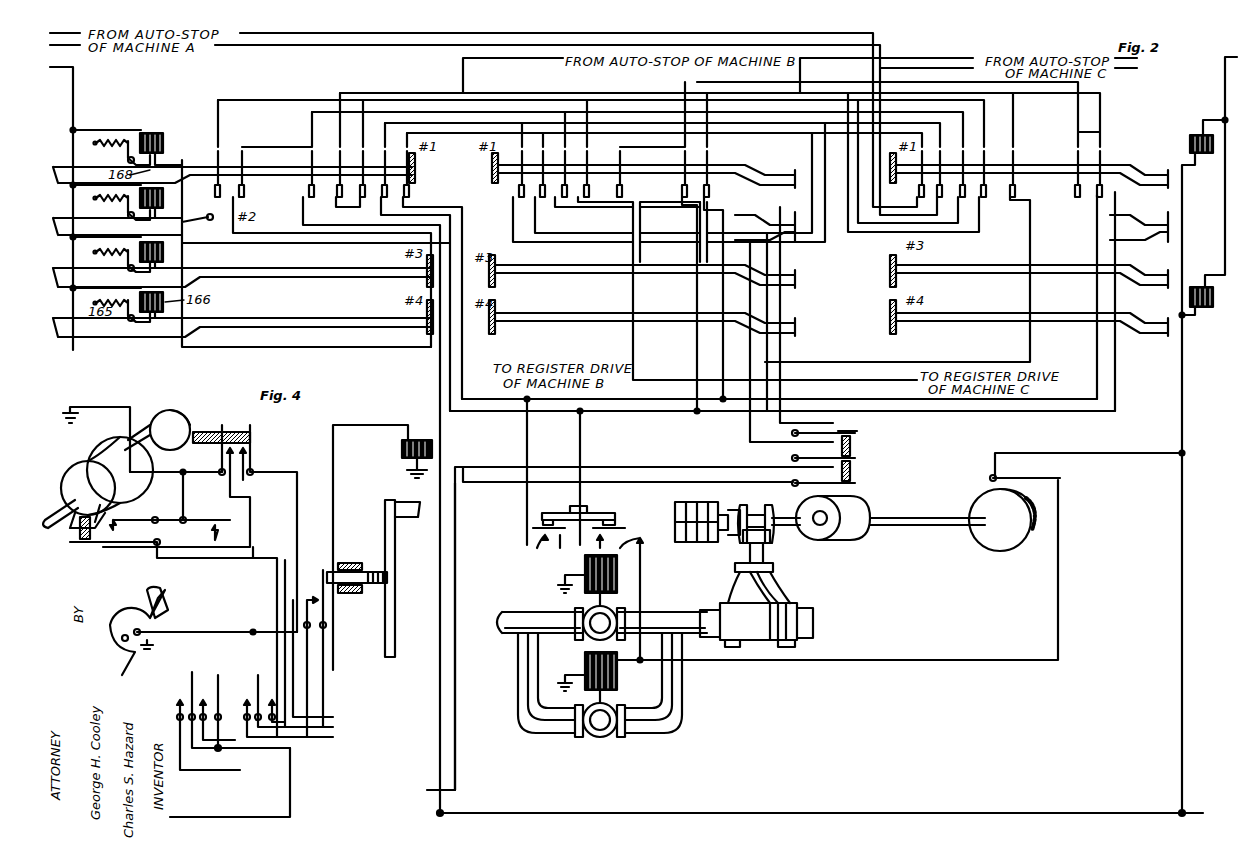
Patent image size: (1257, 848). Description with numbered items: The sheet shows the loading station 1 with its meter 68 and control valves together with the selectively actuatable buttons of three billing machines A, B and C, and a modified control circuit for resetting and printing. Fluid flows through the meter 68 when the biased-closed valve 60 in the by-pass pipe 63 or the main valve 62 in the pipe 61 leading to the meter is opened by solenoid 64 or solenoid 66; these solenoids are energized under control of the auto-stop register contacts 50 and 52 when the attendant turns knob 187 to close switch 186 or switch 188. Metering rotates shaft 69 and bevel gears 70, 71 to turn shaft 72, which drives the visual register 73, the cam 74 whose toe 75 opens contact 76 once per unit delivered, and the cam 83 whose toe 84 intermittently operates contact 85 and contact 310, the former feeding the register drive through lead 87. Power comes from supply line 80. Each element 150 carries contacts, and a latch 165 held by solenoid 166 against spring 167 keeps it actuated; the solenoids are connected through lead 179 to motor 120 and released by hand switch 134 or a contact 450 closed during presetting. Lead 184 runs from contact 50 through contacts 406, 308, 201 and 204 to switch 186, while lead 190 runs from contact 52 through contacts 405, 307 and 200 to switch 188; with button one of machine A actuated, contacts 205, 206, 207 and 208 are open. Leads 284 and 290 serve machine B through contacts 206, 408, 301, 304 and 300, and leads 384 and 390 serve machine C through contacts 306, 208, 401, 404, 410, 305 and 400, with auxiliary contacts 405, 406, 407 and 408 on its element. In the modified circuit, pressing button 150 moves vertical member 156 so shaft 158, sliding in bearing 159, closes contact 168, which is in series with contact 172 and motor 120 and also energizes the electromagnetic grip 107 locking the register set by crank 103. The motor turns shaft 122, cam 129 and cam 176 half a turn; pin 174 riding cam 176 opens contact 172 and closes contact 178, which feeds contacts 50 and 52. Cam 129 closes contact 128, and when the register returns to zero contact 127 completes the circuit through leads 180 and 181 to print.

In FIG. 2, the loading station 1 is at (852, 608).
In FIG. 4, the contact 50 is at (220, 690).
In FIG. 4, the contact 52 is at (180, 695).
In FIG. 2, the valve 60 is at (598, 738).
In FIG. 2, the pipe 61 is at (502, 636).
In FIG. 2, the main valve 62 is at (585, 634).
In FIG. 2, the bypass pipe 63 is at (685, 706).
In FIG. 2, the solenoid 64 is at (618, 679).
In FIG. 2, the solenoid 66 is at (618, 580).
In FIG. 2, the meter 68 is at (780, 590).
In FIG. 2, the shaft 69 is at (766, 555).
In FIG. 2, the bevel gear 70 is at (742, 540).
In FIG. 2, the bevel gear 71 is at (756, 503).
In FIG. 2, the shaft 72 is at (912, 530).
In FIG. 2, the visual register 73 is at (675, 510).
In FIG. 2, the cam 74 is at (1006, 550).
In FIG. 2, the toe 75 is at (1038, 522).
In FIG. 2, the contact 76 is at (1065, 480).
In FIG. 2, the electric supply line 80 is at (1063, 798).
In FIG. 4, the electric supply line 80 is at (265, 812).
In FIG. 2, the cam 83 is at (840, 540).
In FIG. 2, the toe 84 is at (808, 501).
In FIG. 2, the contact 85 is at (852, 471).
In FIG. 2, the lead 87 is at (457, 583).
In FIG. 4, the crank 103 is at (165, 596).
In FIG. 4, the electromagnetic grip 107 is at (102, 612).
In FIG. 4, the motor 120 is at (116, 448).
In FIG. 4, the motor shaft 122 is at (58, 518).
In FIG. 4, the contact 127 is at (270, 700).
In FIG. 4, the contact 128 is at (128, 548).
In FIG. 4, the cam 129 is at (70, 470).
In FIG. 4, the hand switch 134 is at (210, 532).
In FIG. 2, the element 150 is at (198, 165).
In FIG. 4, the element 150 is at (410, 502).
In FIG. 4, the vertical member 156 is at (385, 505).
In FIG. 4, the shaft 158 is at (378, 585).
In FIG. 4, the bearing 159 is at (352, 563).
In FIG. 2, the latch 165 is at (118, 156).
In FIG. 2, the solenoid 166 is at (163, 131).
In FIG. 4, the solenoid 166 is at (425, 440).
In FIG. 2, the spring 167 is at (118, 140).
In FIG. 2, the contact 168 is at (168, 232).
In FIG. 4, the contact 168 is at (336, 633).
In FIG. 4, the contact 172 is at (224, 466).
In FIG. 4, the pin 174 is at (208, 432).
In FIG. 4, the cam 176 is at (168, 410).
In FIG. 4, the contact 178 is at (254, 456).
In FIG. 2, the lead 179 is at (74, 79).
In FIG. 4, the lead 179 is at (370, 425).
In FIG. 4, the lead 180 is at (280, 545).
In FIG. 4, the lead 181 is at (165, 570).
In FIG. 2, the lead 184 is at (300, 47).
In FIG. 4, the lead 184 is at (240, 740).
In FIG. 2, the switch 186 is at (643, 550).
In FIG. 2, the knob 187 is at (555, 512).
In FIG. 2, the switch 188 is at (535, 548).
In FIG. 2, the lead 190 is at (371, 36).
In FIG. 4, the lead 190 is at (245, 768).
In FIG. 2, the contact 200 is at (203, 174).
In FIG. 2, the contact 201 is at (332, 249).
In FIG. 2, the contact 204 is at (369, 482).
In FIG. 2, the contact 205 is at (346, 182).
In FIG. 2, the contact 206 is at (360, 215).
In FIG. 2, the contact 207 is at (398, 215).
In FIG. 2, the contact 208 is at (430, 188).
In FIG. 2, the lead 284 is at (545, 58).
In FIG. 2, the lead 290 is at (492, 58).
In FIG. 2, the contact 300 is at (728, 165).
In FIG. 2, the contact 301 is at (689, 293).
In FIG. 2, the contact 304 is at (632, 192).
In FIG. 2, the contact 305 is at (747, 280).
In FIG. 2, the contact 306 is at (560, 205).
In FIG. 2, the contact 307 is at (673, 183).
In FIG. 2, the contact 308 is at (510, 205).
In FIG. 2, the contact 310 is at (852, 445).
In FIG. 2, the lead 384 is at (973, 70).
In FIG. 2, the lead 390 is at (973, 58).
In FIG. 2, the contact 400 is at (1108, 200).
In FIG. 2, the contact 401 is at (1088, 200).
In FIG. 2, the contact 404 is at (1030, 183).
In FIG. 2, the auxiliary contact 405 is at (985, 200).
In FIG. 2, the auxiliary contact 406 is at (962, 205).
In FIG. 2, the auxiliary contact 407 is at (940, 205).
In FIG. 2, the auxiliary contact 408 is at (994, 175).
In FIG. 2, the contact 410 is at (858, 426).
In FIG. 4, the contact 450 is at (257, 688).